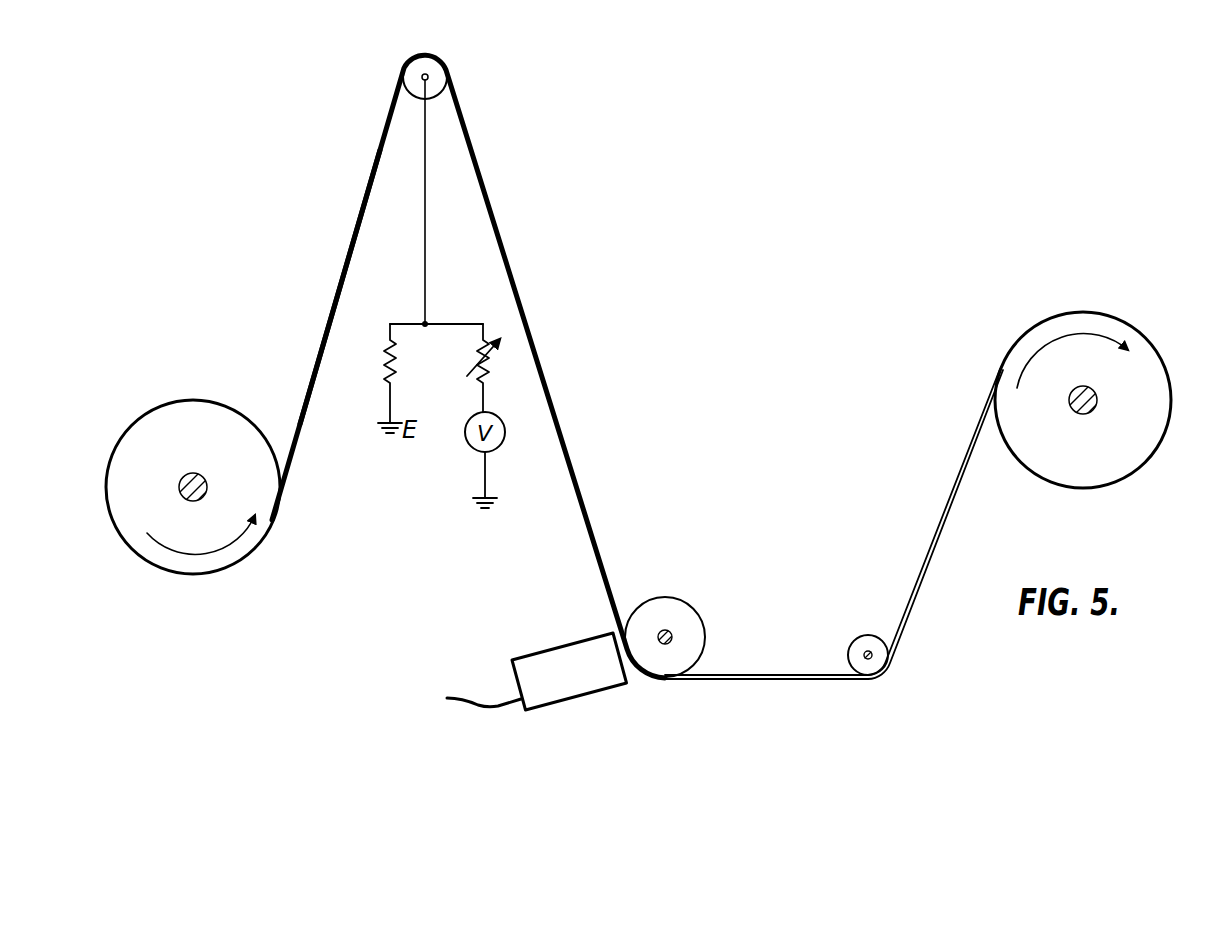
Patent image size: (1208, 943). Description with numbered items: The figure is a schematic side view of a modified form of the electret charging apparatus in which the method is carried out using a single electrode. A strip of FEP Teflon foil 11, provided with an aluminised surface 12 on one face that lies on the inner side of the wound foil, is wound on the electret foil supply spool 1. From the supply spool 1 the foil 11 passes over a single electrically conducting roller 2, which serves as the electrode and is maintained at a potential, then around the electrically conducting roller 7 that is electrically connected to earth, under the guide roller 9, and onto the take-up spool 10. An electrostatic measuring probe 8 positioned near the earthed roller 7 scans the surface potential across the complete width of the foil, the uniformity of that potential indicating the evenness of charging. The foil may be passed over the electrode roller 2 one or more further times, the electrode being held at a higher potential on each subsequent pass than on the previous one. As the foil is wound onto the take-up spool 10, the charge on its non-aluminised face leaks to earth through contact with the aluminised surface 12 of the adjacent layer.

The electret foil supply spool 1 is at (203, 412).
The electrically conducting roller 2 is at (407, 70).
The electrically conducting roller electrically connected to earth 7 is at (684, 606).
The electrostatic measuring probe 8 is at (560, 658).
The guide roller 9 is at (867, 640).
The take-up spool 10 is at (1137, 453).
The foil 11 is at (342, 300).
The aluminised surface 12 is at (354, 197).